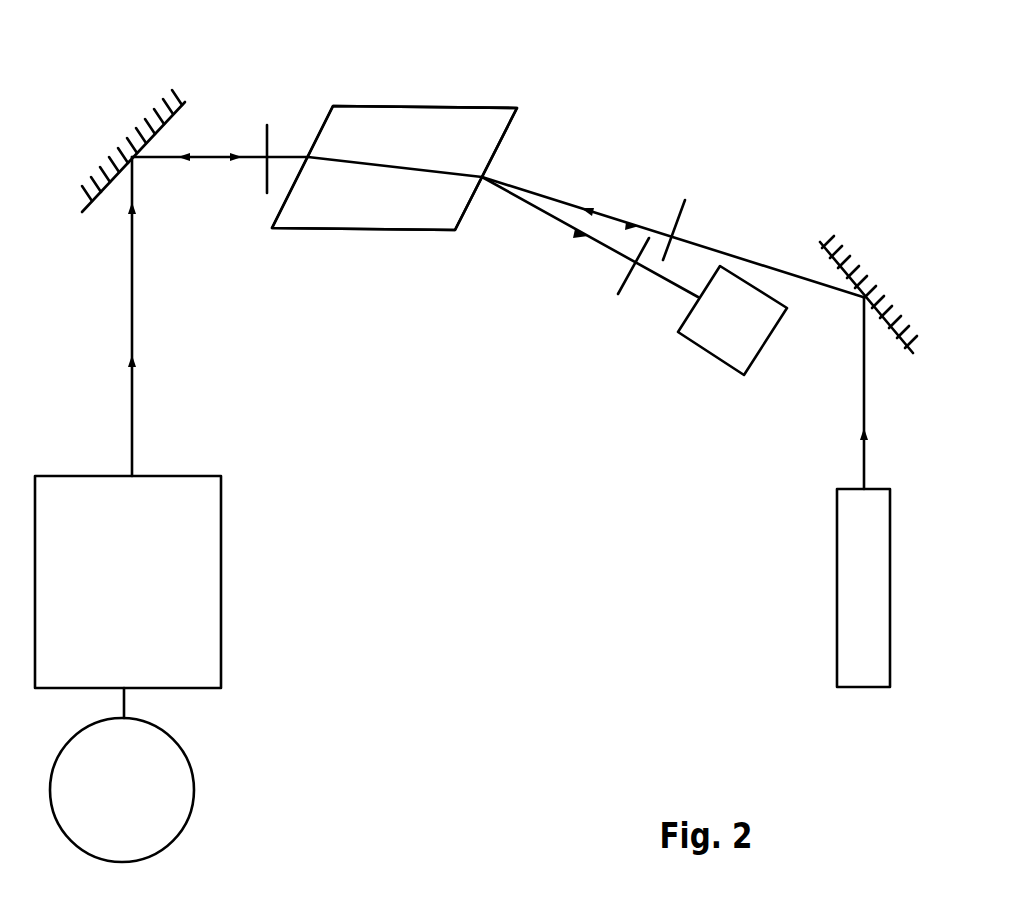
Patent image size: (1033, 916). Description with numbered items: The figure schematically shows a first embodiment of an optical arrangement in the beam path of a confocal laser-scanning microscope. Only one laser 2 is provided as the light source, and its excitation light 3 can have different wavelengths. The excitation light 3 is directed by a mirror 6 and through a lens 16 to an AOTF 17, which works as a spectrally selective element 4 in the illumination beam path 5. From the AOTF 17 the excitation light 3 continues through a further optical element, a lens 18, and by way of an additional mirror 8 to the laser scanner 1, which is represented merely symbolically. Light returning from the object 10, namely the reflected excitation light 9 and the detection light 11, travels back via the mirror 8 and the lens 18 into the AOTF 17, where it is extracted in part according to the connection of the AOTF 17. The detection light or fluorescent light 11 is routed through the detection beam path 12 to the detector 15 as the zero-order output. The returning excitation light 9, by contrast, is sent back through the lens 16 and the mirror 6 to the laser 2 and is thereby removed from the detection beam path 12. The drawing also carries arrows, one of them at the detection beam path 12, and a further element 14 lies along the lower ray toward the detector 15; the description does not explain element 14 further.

The laser scanner 1 is at (225, 623).
The laser 2 is at (837, 607).
The excitation light 3 is at (863, 453).
The spectrally selective element 4 is at (394, 168).
The illumination beam path 5 is at (122, 272).
The mirror 6 is at (847, 258).
The mirror 8 is at (183, 112).
The reflected excitation light 9 is at (605, 215).
The object 10 is at (122, 775).
The detection light 11 is at (172, 158).
The detection beam path 12 is at (238, 132).
The reflected beam 14 is at (607, 247).
The detector 15 is at (705, 357).
The lens 16 is at (682, 217).
The AOTF 17 is at (412, 106).
The lens 18 is at (267, 140).